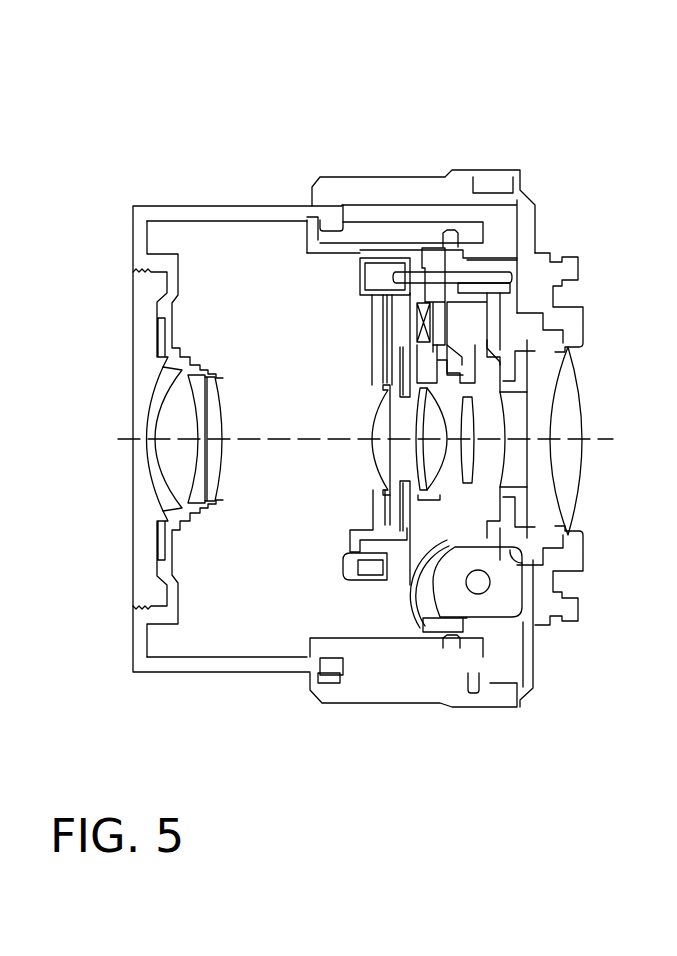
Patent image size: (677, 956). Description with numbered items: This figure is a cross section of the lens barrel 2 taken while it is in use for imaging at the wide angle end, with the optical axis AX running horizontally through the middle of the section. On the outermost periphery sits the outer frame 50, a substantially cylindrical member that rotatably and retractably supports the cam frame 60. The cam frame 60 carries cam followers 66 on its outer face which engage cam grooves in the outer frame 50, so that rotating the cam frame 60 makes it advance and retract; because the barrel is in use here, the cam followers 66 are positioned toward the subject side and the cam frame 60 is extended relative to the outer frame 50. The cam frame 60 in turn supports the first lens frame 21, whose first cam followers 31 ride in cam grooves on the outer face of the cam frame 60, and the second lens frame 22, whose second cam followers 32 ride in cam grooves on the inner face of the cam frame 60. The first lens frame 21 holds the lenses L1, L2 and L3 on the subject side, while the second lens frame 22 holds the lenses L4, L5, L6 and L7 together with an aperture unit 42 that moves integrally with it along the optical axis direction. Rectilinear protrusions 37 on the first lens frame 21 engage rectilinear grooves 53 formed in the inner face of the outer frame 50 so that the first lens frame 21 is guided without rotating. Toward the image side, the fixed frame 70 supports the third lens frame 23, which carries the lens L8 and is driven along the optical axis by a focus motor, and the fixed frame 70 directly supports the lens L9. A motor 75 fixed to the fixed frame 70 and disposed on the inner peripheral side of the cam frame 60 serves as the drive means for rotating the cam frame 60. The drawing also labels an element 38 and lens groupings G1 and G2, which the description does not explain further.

The lens barrel 2 is at (142, 98).
The first lens frame 21 is at (160, 216).
The second lens frame 22 is at (530, 555).
The third lens frame 23 is at (515, 508).
The first cam followers 31 is at (332, 227).
The second cam followers 32 is at (450, 238).
The rectilinear protrusions 37 is at (333, 680).
The stopper 38 is at (307, 220).
The aperture unit 42 is at (400, 372).
The outer frame 50 is at (412, 187).
The rectilinear grooves 53 is at (415, 677).
The cam frame 60 is at (385, 228).
The cam followers 66 is at (473, 687).
The fixed frame 70 is at (553, 565).
The motor 75 is at (493, 600).
The optical axis AX is at (132, 438).
The first lens group G1 is at (90, 472).
The second lens group G2 is at (296, 452).
The lens L1 is at (150, 463).
The lens L2 is at (202, 455).
The lens L3 is at (212, 465).
The lens L4 is at (380, 448).
The lens L5 is at (422, 445).
The lens L6 is at (433, 447).
The lens L7 is at (467, 443).
The lens L8 is at (503, 420).
The lens L9 is at (570, 422).